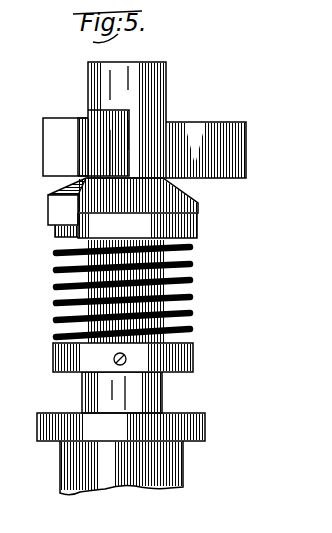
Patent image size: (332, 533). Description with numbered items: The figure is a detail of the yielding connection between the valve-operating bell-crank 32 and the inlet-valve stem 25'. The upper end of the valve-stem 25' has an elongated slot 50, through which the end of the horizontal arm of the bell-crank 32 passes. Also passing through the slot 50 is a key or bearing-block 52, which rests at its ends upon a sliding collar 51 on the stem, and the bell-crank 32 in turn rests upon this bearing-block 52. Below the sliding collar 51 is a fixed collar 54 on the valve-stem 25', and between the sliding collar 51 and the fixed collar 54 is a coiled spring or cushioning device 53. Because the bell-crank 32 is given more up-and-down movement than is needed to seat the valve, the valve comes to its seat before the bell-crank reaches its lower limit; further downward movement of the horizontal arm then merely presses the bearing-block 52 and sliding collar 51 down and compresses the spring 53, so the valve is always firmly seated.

The stem 25' is at (142, 229).
The slot 50 is at (86, 112).
The bell-crank 32 is at (239, 148).
The key or bearing-block 52 is at (190, 203).
The sliding collar 51 is at (199, 231).
The coiled spring or cushioning device 53 is at (194, 297).
The fixed collar 54 is at (195, 356).